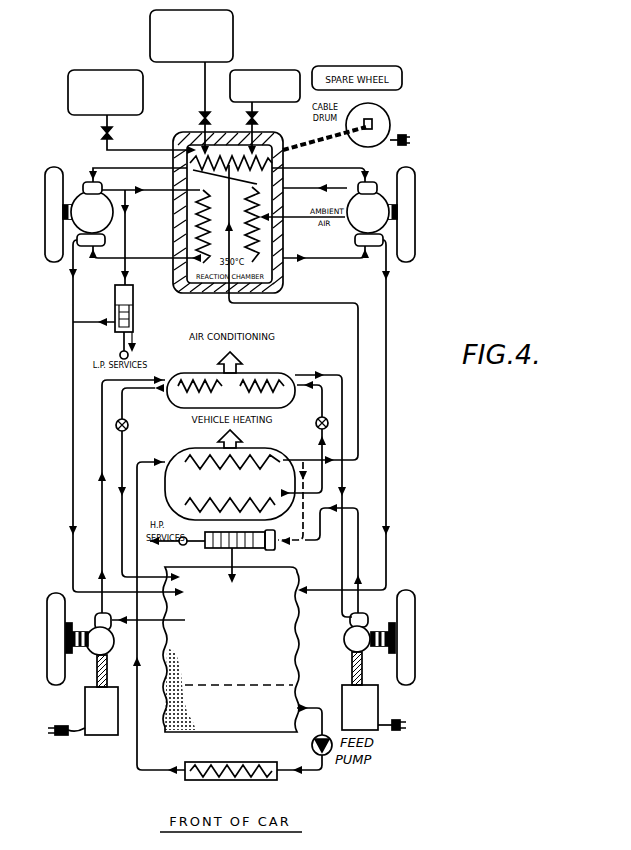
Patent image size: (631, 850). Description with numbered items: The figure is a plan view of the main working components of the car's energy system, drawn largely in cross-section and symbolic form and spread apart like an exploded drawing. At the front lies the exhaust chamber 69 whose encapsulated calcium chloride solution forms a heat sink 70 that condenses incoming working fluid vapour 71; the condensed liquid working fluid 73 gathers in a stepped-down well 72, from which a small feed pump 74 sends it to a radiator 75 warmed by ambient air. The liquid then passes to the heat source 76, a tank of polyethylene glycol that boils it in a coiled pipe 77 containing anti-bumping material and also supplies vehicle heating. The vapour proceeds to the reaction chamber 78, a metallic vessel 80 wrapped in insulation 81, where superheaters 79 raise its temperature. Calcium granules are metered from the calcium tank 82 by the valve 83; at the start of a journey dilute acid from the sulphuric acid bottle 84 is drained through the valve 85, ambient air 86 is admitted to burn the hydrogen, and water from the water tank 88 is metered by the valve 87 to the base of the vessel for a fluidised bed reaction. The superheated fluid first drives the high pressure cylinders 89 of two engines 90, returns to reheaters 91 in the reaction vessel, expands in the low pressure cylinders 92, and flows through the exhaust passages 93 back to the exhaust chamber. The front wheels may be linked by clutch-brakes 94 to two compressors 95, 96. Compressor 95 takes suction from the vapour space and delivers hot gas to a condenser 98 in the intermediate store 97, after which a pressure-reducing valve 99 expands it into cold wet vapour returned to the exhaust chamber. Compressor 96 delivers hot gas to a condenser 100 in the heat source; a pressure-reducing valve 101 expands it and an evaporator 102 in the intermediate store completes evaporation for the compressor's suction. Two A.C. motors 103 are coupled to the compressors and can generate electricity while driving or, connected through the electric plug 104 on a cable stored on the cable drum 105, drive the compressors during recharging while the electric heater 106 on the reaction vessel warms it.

The exhaust chamber 69 is at (292, 629).
The heat sink 70 is at (217, 761).
The vapour 71 is at (232, 614).
The well 72 is at (287, 686).
The liquid working fluid 73 is at (238, 724).
The feed pump 74 is at (338, 739).
The radiator 75 is at (234, 781).
The heat source 76 is at (170, 499).
The coiled pipe 77 is at (205, 466).
The reaction chamber 78 is at (283, 270).
The superheater 79 is at (231, 180).
The metallic vessel 80 is at (231, 157).
The insulation 81 is at (175, 202).
The calcium tank 82 is at (68, 112).
The valve 83 is at (101, 134).
The H2SO4 bottle 84 is at (150, 31).
The valve 85 is at (200, 120).
The ambient air 86 is at (306, 227).
The valve 87 is at (247, 120).
The water tank 88 is at (285, 70).
The high pressure cylinders 89 is at (93, 170).
The engine 90 is at (74, 203).
The reheaters 91 is at (173, 221).
The low pressure cylinders 92 is at (108, 241).
The exhaust passages 93 is at (73, 432).
The clutch-brakes 94 is at (72, 626).
The compressor 95 is at (113, 639).
The compressor 96 is at (345, 637).
The intermediate store 97 is at (175, 401).
The condenser 98 is at (193, 376).
The pressure-reducing valve 99 is at (128, 427).
The condenser 100 is at (298, 527).
The pressure-reducing valve 101 is at (313, 426).
The evaporator 102 is at (271, 376).
The A.C. motor 103 is at (85, 708).
The electric plug 104 is at (406, 143).
The cable drum 105 is at (374, 109).
The electric heater 106 is at (285, 153).